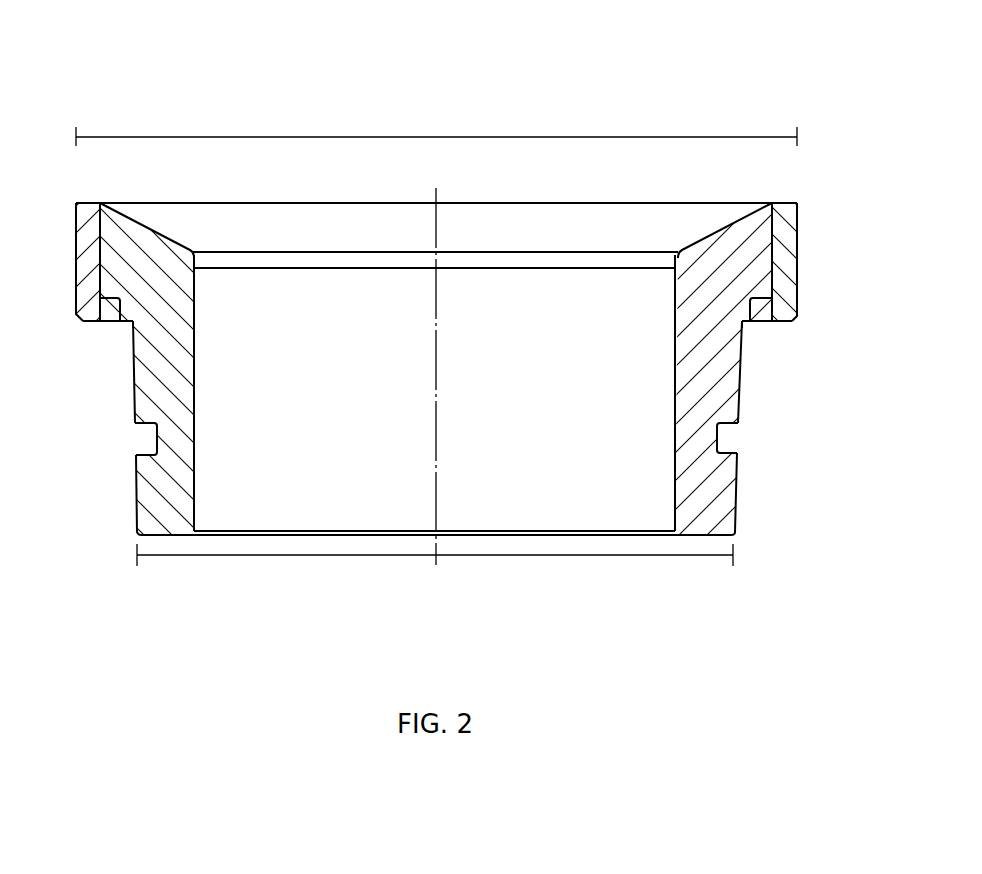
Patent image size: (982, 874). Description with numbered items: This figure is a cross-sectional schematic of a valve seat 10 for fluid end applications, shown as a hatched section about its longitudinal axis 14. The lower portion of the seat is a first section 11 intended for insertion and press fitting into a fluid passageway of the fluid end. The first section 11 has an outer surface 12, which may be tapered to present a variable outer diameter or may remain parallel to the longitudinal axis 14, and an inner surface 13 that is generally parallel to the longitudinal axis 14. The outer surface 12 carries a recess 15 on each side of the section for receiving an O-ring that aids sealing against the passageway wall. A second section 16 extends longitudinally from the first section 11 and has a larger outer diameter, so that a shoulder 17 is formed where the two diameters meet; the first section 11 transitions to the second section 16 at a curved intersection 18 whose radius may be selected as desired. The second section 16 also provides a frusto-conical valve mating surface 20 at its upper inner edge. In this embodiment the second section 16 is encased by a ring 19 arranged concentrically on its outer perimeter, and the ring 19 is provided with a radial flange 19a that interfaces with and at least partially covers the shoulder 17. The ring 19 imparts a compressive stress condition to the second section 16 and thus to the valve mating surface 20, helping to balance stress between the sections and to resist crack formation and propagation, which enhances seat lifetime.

The valve seat 10 is at (162, 58).
The first section 11 is at (80, 325).
The outer surface 12 is at (735, 480).
The inner surface 13 is at (194, 483).
The longitudinal axis 14 is at (439, 364).
The recess 15 is at (123, 420).
The second section 16 is at (57, 203).
The shoulder 17 is at (770, 338).
The curved intersection 18 is at (752, 330).
The ring 19 is at (797, 223).
The radial flange 19a is at (772, 306).
The frusto-conical valve mating surface 20 is at (124, 199).